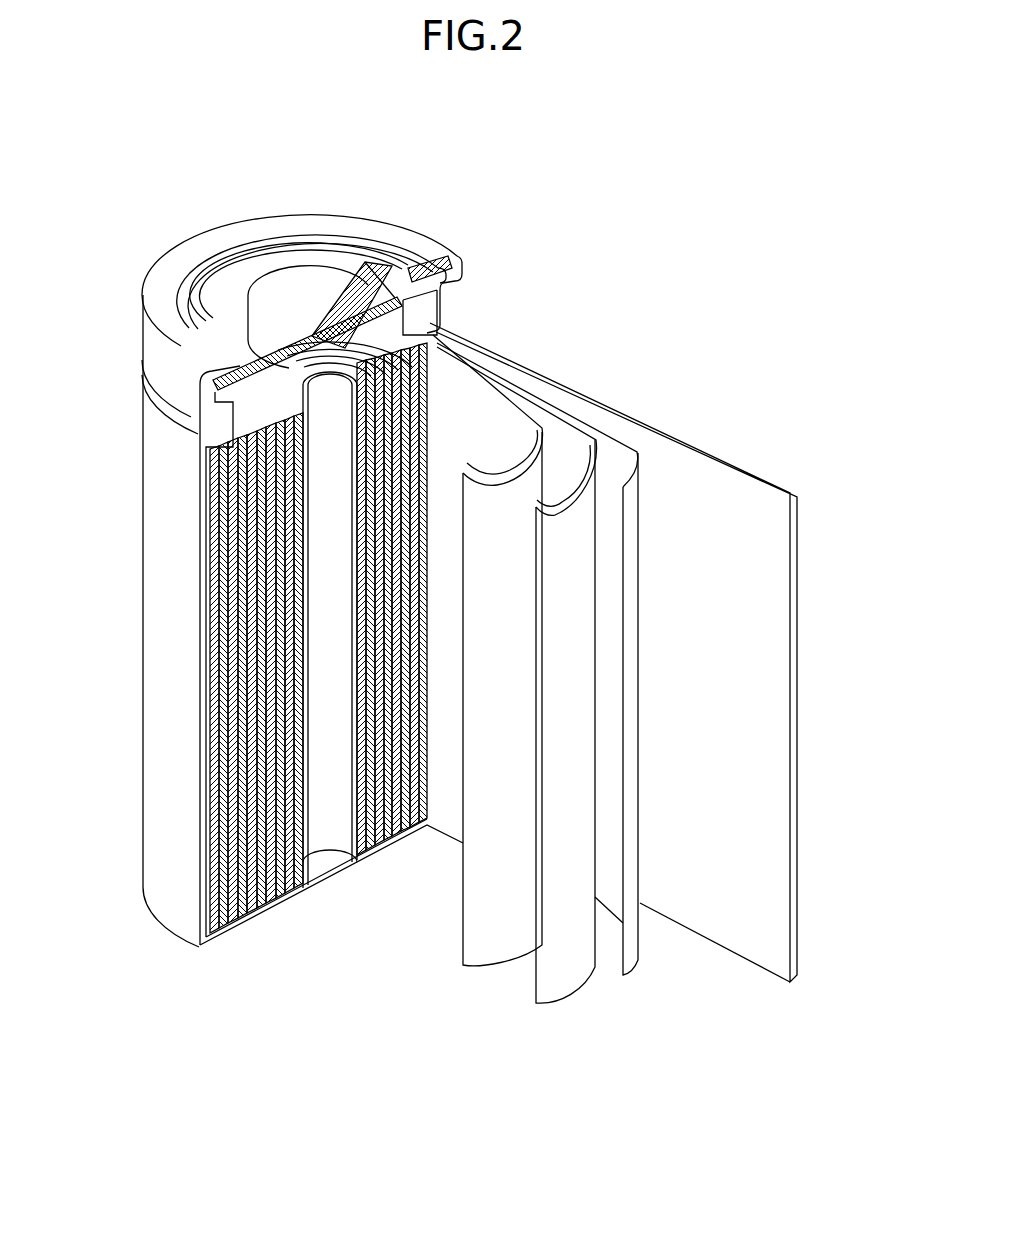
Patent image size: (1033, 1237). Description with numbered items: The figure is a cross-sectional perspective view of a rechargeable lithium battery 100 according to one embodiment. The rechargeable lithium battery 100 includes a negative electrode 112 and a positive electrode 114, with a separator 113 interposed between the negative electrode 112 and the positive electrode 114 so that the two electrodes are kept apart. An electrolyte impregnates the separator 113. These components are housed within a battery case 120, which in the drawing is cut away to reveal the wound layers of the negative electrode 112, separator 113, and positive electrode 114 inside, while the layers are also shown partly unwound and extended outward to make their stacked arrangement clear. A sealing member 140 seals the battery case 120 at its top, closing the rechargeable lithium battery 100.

The rechargeable lithium battery 100 is at (482, 190).
The negative electrode 112 is at (793, 698).
The separator 113 is at (513, 387).
The positive electrode 114 is at (570, 422).
The battery case 120 is at (150, 636).
The sealing member 140 is at (316, 252).